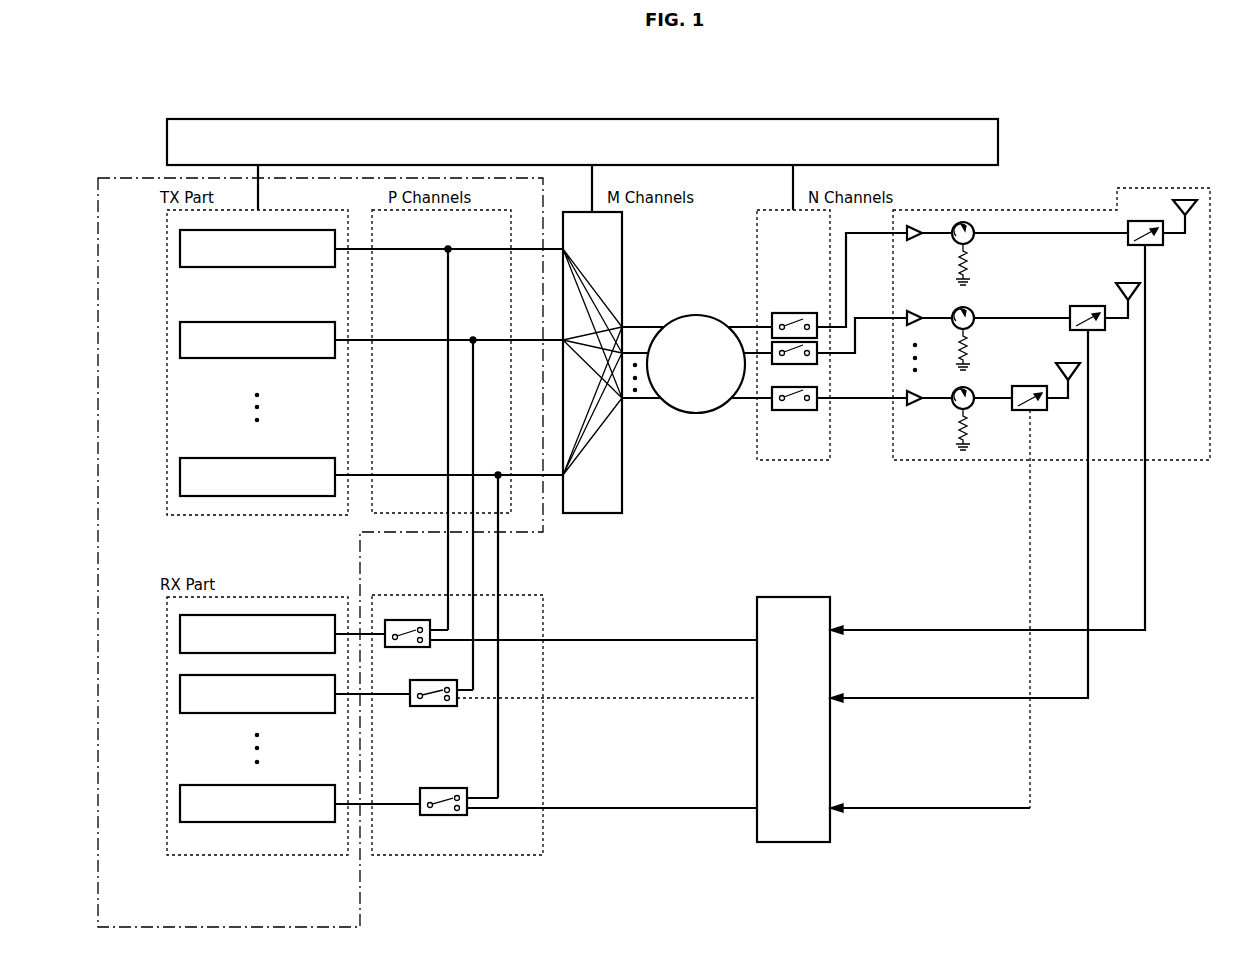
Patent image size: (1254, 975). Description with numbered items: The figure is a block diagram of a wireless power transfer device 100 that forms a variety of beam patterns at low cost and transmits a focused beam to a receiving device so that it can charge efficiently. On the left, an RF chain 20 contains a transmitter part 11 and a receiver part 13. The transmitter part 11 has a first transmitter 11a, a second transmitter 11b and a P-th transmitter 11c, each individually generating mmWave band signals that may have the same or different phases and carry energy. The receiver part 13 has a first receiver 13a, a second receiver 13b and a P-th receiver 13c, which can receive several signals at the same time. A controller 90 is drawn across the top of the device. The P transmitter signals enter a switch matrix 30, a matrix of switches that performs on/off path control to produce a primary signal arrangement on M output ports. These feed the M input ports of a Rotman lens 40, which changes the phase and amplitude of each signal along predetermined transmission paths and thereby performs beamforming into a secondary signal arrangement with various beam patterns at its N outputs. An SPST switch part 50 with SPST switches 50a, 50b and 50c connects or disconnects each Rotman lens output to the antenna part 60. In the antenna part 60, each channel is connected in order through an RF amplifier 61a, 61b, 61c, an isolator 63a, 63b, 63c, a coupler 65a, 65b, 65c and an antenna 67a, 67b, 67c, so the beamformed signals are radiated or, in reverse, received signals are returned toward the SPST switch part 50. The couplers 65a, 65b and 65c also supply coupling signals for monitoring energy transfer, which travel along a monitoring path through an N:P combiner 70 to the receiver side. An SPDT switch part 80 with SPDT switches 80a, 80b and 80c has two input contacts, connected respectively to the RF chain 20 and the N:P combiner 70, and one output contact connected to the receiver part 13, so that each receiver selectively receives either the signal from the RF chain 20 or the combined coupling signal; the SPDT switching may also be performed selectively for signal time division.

The wireless power transfer device 100 is at (1058, 148).
The radio frequency (RF) chain 20 is at (98, 297).
The controller 90 is at (167, 143).
The transmitter part 11 is at (230, 398).
The first transmitter 11a is at (180, 249).
The second transmitter 11b is at (180, 340).
The P-th transmitter 11c is at (180, 475).
The receiver part 13 is at (230, 760).
The first receiver 13a is at (180, 634).
The second receiver 13b is at (180, 694).
The P-th receiver 13c is at (180, 804).
The switch matrix 30 is at (590, 513).
The Rotman lens 40 is at (697, 413).
The single pole single throw (SPST) switch part 50 is at (821, 369).
The SPST switch 50a is at (797, 313).
The SPST switch 50b is at (817, 363).
The SPST switch 50c is at (817, 410).
The antenna part 60 is at (1055, 339).
The RF amplifier 61a is at (915, 226).
The RF amplifier 61b is at (915, 311).
The RF amplifier 61c is at (915, 405).
The isolator 63a is at (965, 222).
The isolator 63b is at (968, 307).
The isolator 63c is at (968, 409).
The coupler 65a is at (1145, 221).
The coupler 65b is at (1088, 306).
The coupler 65c is at (1030, 386).
The antenna 67a is at (1185, 200).
The antenna 67b is at (1140, 292).
The antenna 67c is at (1080, 372).
The N:P combiner 70 is at (793, 842).
The single pole double throw (SPDT) switch part 80 is at (457, 759).
The SPDT switch 80a is at (394, 647).
The SPDT switch 80b is at (435, 706).
The SPDT switch 80c is at (467, 815).